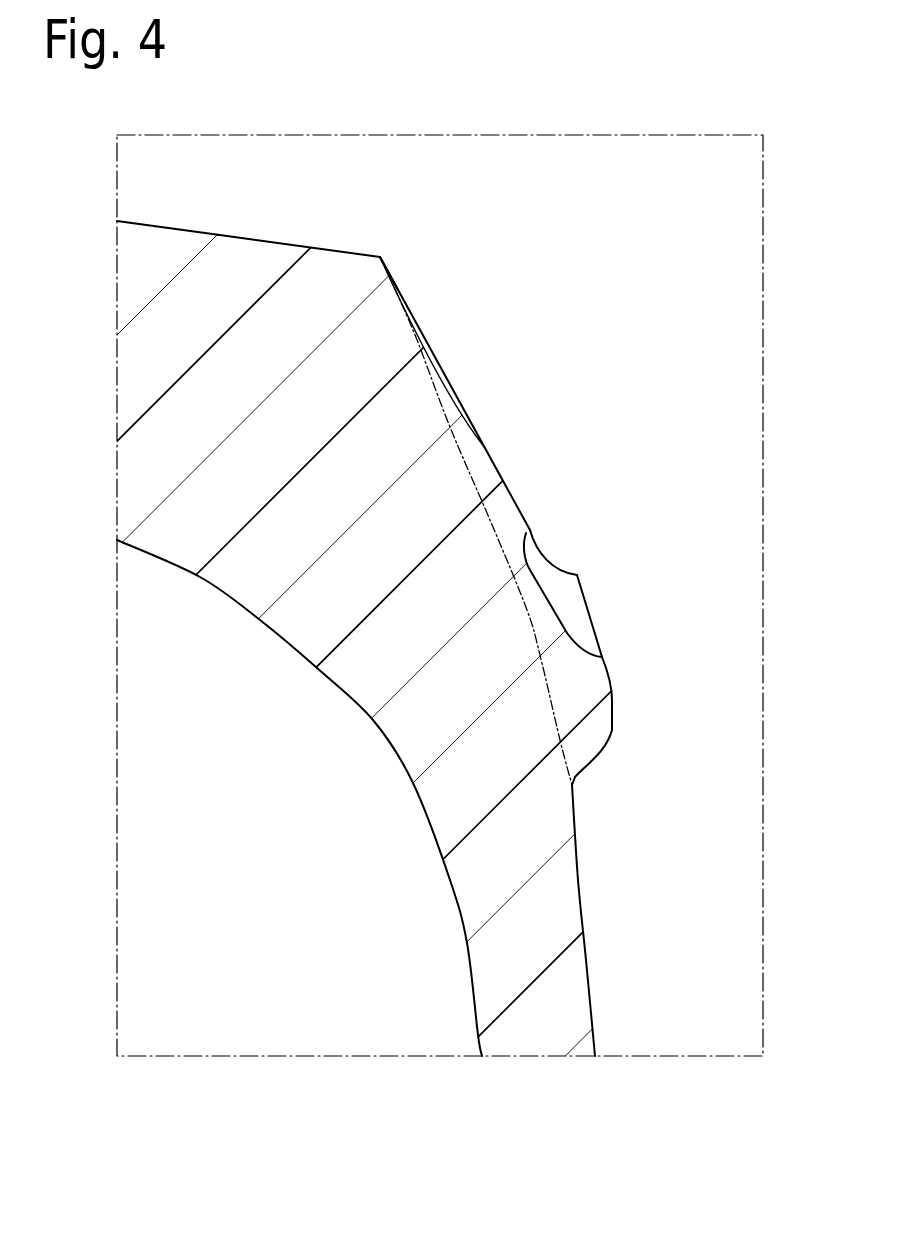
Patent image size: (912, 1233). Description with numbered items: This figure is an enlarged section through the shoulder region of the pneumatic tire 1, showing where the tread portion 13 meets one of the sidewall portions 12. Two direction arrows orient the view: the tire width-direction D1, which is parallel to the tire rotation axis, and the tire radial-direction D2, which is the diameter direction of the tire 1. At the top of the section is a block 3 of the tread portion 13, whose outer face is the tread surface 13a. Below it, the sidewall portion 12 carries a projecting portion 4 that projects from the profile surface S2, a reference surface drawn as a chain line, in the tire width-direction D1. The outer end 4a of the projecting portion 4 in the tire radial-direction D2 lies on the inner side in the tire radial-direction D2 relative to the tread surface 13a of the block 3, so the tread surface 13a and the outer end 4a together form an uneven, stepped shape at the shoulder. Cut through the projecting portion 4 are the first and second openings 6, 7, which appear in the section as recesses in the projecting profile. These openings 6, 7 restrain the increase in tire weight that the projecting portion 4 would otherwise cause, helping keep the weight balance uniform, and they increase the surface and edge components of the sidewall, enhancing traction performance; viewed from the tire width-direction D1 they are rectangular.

The tire 1 is at (732, 167).
The block 3 is at (263, 235).
The projecting portion 4 is at (502, 457).
The outer end of the projecting portion 4a is at (385, 259).
The first opening 6 is at (587, 623).
The second opening 7 is at (448, 378).
The sidewall portion 12 is at (653, 922).
The tread portion 13 is at (167, 175).
The tread surface 13a is at (218, 233).
The profile surface S2 is at (493, 527).
The tire width-direction D1 is at (222, 1092).
The tire radial-direction D2 is at (82, 953).